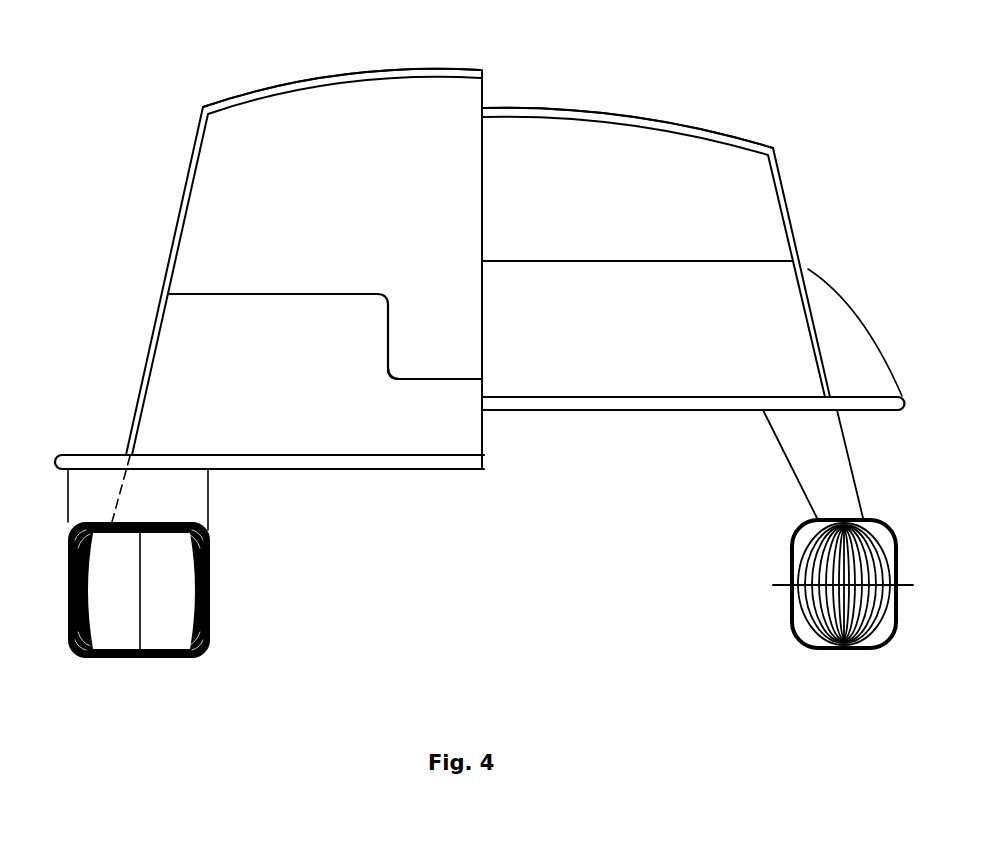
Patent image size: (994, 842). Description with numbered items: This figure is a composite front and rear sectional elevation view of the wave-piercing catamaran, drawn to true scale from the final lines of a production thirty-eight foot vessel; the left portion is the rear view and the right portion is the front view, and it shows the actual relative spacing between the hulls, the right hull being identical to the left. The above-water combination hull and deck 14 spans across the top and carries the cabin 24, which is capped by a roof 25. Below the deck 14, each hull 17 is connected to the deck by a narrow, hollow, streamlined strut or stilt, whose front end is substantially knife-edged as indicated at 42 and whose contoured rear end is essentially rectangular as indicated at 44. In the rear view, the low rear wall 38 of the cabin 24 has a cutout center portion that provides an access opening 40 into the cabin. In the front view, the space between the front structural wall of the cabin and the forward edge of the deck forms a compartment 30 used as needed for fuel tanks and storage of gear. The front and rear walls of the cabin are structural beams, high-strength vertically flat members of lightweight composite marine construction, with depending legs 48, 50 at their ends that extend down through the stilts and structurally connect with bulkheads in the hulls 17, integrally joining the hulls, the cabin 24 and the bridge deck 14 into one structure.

The combination hull and deck 14 is at (383, 469).
The left hull 17 is at (208, 583).
The cabin 24 is at (393, 112).
The roof 25 is at (274, 86).
The compartment 30 is at (750, 278).
The rear wall 38 is at (285, 305).
The access opening 40 is at (466, 378).
The knife-edged front end 42 is at (797, 446).
The rectangular rear end 44 is at (188, 497).
The depending leg 48 is at (123, 476).
The depending leg 50 is at (852, 458).